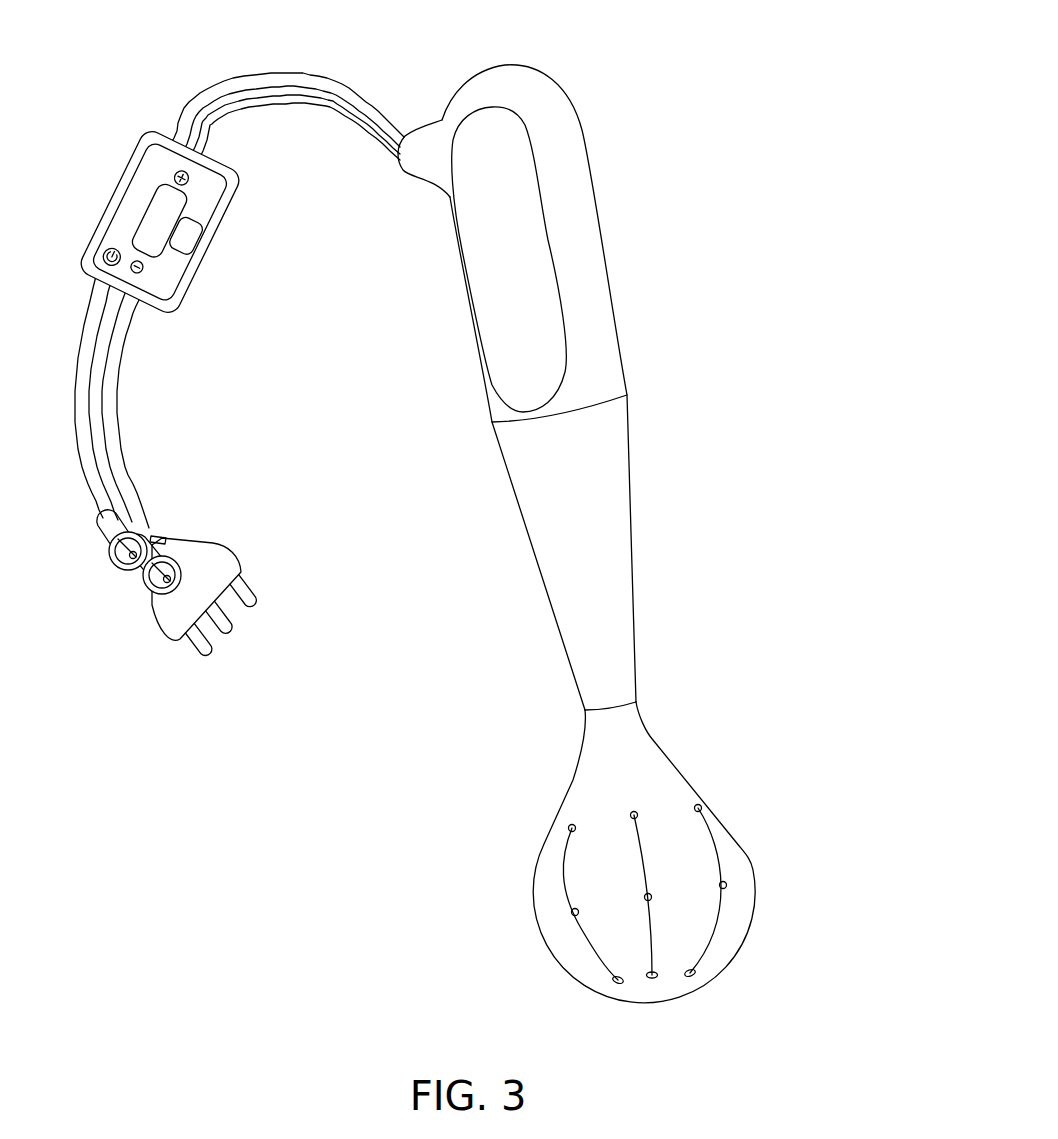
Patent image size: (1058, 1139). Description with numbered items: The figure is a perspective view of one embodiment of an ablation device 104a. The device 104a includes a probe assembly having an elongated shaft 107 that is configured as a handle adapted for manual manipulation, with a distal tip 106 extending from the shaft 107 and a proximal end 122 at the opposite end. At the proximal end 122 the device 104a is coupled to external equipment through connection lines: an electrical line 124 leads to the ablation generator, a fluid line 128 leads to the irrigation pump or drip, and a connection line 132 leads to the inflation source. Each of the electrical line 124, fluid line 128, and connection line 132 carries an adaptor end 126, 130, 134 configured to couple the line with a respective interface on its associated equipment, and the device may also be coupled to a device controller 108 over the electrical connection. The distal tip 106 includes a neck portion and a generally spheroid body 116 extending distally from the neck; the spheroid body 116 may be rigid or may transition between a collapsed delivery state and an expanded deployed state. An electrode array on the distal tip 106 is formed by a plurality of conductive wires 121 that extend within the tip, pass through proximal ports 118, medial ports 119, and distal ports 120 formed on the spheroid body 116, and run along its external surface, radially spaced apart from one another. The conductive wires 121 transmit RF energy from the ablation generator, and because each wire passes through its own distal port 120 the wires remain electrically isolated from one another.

The ablation device 104a is at (645, 84).
The distal tip 106 is at (670, 862).
The elongated shaft 107 is at (650, 450).
The device controller 108 is at (125, 170).
The spheroid body 116 is at (747, 887).
The proximal ports 118 is at (569, 826).
The medial ports 119 is at (572, 910).
The distal ports 120 is at (614, 982).
The conductive wires 121 is at (715, 935).
The proximal end 122 is at (428, 122).
The electrical line 124 is at (379, 152).
The adaptor end 126 is at (223, 562).
The fluid line 128 is at (287, 92).
The adaptor end 130 is at (152, 588).
The connection line 132 is at (260, 84).
The adaptor end 134 is at (112, 567).